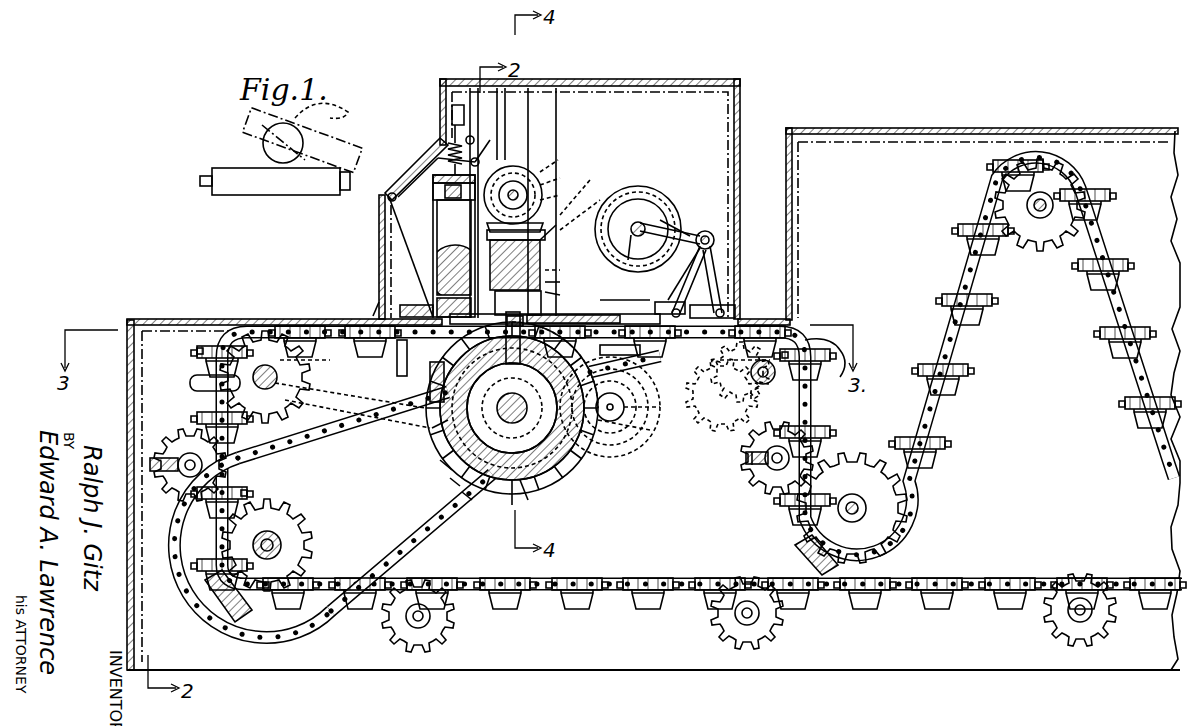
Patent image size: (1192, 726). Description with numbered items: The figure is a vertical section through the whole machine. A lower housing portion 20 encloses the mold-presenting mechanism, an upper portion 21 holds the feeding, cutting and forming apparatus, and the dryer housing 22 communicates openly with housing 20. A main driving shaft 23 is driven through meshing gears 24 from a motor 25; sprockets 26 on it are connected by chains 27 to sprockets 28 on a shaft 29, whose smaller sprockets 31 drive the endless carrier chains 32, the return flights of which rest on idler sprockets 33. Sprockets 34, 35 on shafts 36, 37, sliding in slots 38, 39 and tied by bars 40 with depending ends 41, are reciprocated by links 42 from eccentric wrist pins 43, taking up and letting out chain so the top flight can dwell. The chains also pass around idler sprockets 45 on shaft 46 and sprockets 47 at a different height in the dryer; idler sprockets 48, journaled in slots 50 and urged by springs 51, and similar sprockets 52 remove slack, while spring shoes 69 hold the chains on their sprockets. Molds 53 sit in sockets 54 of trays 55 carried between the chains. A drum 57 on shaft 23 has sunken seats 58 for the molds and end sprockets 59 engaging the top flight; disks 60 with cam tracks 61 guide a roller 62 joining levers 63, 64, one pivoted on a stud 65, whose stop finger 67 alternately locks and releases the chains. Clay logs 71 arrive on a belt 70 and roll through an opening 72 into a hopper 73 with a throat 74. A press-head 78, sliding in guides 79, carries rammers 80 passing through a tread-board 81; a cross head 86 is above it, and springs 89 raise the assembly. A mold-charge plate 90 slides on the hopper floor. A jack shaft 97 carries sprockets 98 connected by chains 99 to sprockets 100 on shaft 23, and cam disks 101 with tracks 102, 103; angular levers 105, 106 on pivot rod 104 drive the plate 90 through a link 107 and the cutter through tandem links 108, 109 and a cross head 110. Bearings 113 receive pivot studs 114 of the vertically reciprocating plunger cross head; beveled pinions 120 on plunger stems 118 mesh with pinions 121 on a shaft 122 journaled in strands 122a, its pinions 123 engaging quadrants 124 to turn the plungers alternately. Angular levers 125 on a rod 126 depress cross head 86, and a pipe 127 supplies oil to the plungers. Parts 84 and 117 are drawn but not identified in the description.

The lower housing portion 20 is at (127, 380).
The upper housing portion 21 is at (700, 82).
The dryer housing 22 is at (993, 130).
The main driving shaft 23 is at (528, 500).
The meshing gears 24 is at (640, 409).
The motor 25 is at (640, 395).
The sprockets 26 is at (610, 382).
The chains 27 is at (372, 420).
The sprockets 28 is at (262, 634).
The shaft 29 is at (275, 537).
The smaller sprockets 31 is at (350, 520).
The endless carrier chains 32 is at (345, 326).
The idler sprockets 33 is at (445, 640).
The sprockets 34 is at (290, 400).
The sprockets 35 is at (730, 395).
The shaft 36 is at (252, 382).
The shaft 37 is at (763, 382).
The horizontal slots 38 is at (200, 376).
The horizontal slots 39 is at (850, 358).
The bars 40 is at (340, 356).
The depending ends 41 is at (313, 376).
The links 42 is at (347, 398).
The eccentric wrist pins 43 is at (462, 496).
The idler sprockets 45 is at (905, 490).
The shaft 46 is at (853, 494).
The idler sprockets 47 is at (1060, 180).
The idler sprockets 48 is at (750, 464).
The horizontal slots 50 is at (165, 473).
The springs 51 is at (172, 452).
The idler sprockets 52 is at (180, 438).
The molds 53 is at (275, 326).
The mold sockets 54 is at (208, 352).
The trays 55 is at (195, 500).
The cylindrical drum 57 is at (450, 478).
The sunken seats 58 is at (435, 470).
The sprockets 59 is at (440, 455).
The disks 60 is at (568, 362).
The eccentric cam tracks 61 is at (432, 428).
The roller 62 is at (505, 378).
The lever 63 is at (402, 355).
The lever 64 is at (635, 352).
The stud 65 is at (440, 370).
The stop finger 67 is at (378, 314).
The spring actuated shoes 69 is at (205, 600).
The endless conveyor belt 70 is at (218, 172).
The log 71 is at (262, 143).
The opening 72 is at (400, 200).
The hopper 73 is at (379, 210).
The throat 74 is at (433, 250).
The press-head 78 is at (388, 198).
The vertical guides 79 is at (410, 180).
The rammers 80 is at (445, 220).
The tread-board 81 is at (433, 205).
The ball 84 is at (455, 255).
The cross head 86 is at (432, 147).
The springs 89 is at (458, 124).
The mold-charge plate 90 is at (640, 304).
The jack shaft 97 is at (678, 216).
The sprockets 98 is at (660, 212).
The chains 99 is at (645, 300).
The sprockets 100 is at (545, 495).
The cam disks 101 is at (642, 186).
The cam-track 102 is at (638, 229).
The cam-track 103 is at (548, 272).
The pivot rod 104 is at (715, 238).
The angular levers 105 is at (708, 232).
The angular levers 106 is at (710, 226).
The link 107 is at (700, 310).
The tandem link 108 is at (548, 294).
The tandem link 109 is at (548, 284).
The cross head 110 is at (430, 308).
The bearings 113 is at (548, 232).
The pivot studs 114 is at (434, 276).
The base block 117 is at (505, 310).
The stems 118 is at (542, 262).
The beveled pinions 120 is at (545, 200).
The beveled pinions 121 is at (545, 185).
The shaft 122 is at (512, 178).
The strands 122a is at (550, 168).
The pinions 123 is at (535, 178).
The quadrants 124 is at (585, 185).
The angular levers 125 is at (440, 152).
The horizontal rod 126 is at (476, 140).
The pipe 127 is at (585, 208).